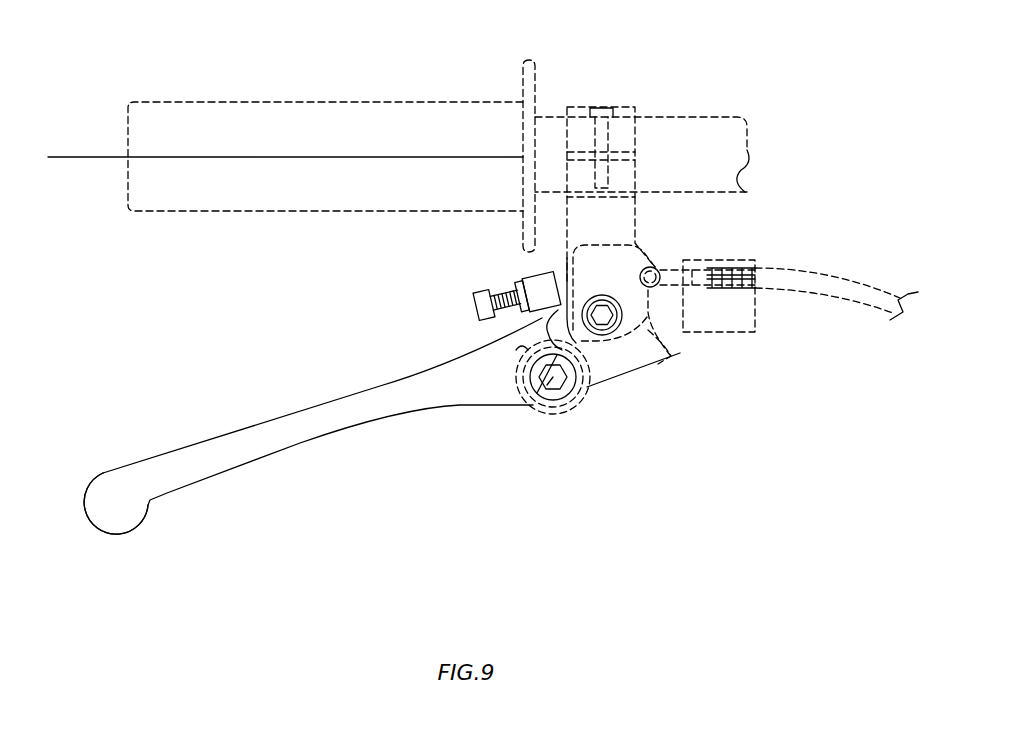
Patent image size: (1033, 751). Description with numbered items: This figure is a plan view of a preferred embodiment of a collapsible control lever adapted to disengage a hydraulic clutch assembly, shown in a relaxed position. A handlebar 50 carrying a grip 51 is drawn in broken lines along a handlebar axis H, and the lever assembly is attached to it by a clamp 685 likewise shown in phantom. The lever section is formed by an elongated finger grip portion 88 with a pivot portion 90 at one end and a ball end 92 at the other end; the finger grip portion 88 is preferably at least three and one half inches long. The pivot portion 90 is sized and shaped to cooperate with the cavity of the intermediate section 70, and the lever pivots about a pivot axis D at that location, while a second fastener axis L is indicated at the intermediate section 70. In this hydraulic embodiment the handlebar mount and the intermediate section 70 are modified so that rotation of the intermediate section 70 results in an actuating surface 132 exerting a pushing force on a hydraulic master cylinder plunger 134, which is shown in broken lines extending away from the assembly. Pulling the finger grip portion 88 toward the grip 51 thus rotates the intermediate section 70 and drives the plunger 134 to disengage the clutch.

The handlebar grip 51 is at (210, 101).
The handlebar axis H is at (272, 157).
The handlebar 50 is at (715, 116).
The clamp 685 is at (596, 195).
The finger grip portion 88 is at (318, 437).
The ball end 92 is at (118, 535).
The pivot portion 90 is at (587, 403).
The pivot axis D is at (535, 408).
The lever arm bolt L is at (602, 315).
The intermediate section 70 is at (653, 335).
The actuating surface 132 is at (728, 272).
The hydraulic master cylinder plunger 134 is at (737, 276).